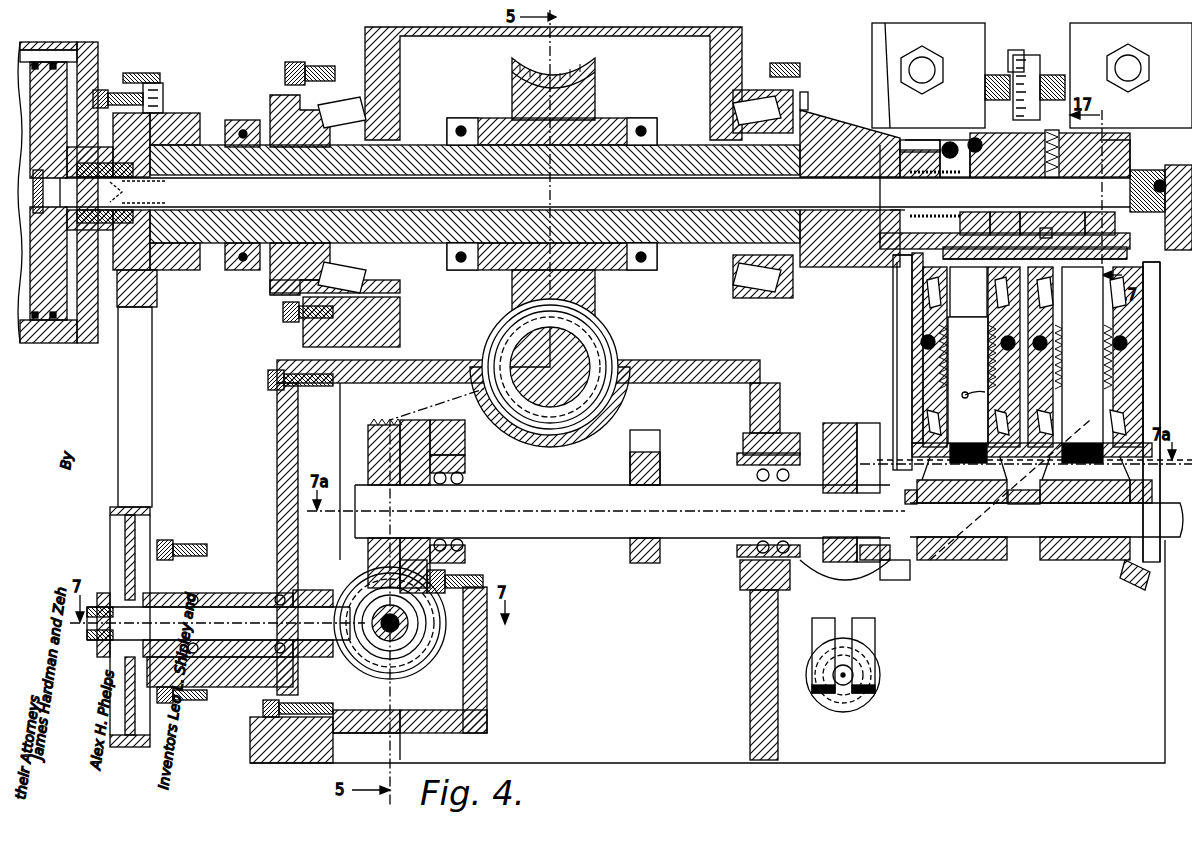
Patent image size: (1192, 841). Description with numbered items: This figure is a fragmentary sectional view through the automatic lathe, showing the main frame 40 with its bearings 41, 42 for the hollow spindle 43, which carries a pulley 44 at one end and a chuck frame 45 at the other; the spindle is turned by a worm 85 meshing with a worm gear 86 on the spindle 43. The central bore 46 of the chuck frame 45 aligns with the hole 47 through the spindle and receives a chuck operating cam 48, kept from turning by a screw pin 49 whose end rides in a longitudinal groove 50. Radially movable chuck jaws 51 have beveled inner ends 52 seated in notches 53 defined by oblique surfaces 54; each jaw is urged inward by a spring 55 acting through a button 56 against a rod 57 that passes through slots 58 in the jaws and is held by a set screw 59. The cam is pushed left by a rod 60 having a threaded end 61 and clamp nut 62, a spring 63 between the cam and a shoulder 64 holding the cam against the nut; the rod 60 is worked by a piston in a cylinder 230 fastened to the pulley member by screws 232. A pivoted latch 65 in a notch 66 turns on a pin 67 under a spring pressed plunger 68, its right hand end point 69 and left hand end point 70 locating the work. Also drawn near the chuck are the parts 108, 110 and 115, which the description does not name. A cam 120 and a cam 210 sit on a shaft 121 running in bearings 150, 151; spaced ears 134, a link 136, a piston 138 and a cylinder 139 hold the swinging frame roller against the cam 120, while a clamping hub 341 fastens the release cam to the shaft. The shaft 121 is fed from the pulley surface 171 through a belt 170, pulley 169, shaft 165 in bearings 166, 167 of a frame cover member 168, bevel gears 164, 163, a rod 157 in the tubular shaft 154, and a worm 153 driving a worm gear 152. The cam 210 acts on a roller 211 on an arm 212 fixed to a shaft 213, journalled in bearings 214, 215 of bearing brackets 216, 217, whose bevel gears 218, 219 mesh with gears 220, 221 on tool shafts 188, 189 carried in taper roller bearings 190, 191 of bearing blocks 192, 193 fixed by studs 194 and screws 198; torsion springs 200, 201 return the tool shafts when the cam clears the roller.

The main frame 40 is at (484, 680).
The bearing 41 is at (345, 110).
The bearing 42 is at (757, 118).
The spindle 43 is at (272, 160).
The pulley 44 is at (165, 128).
The chuck frame 45 is at (858, 132).
The central bore 46 is at (930, 140).
The hole 47 is at (660, 178).
The chuck operating cam 48 is at (1120, 140).
The screw pin 49 is at (1053, 132).
The longitudinal groove 50 is at (1012, 165).
The chuck jaws 51 is at (1130, 240).
The beveled inner end 52 is at (1008, 222).
The notch 53 is at (938, 214).
The oblique surface 54 is at (1036, 222).
The spring 55 is at (985, 222).
The button 56 is at (968, 370).
The rod 57 is at (975, 360).
The slots 58 is at (1130, 253).
The set screw 59 is at (1062, 224).
The rod 60 is at (600, 185).
The threaded end 61 is at (1142, 172).
The clamp nut 62 is at (1162, 180).
The spring 63 is at (895, 210).
The shoulder 64 is at (890, 191).
The pivoted latch 65 is at (950, 142).
The notch 66 is at (985, 125).
The pin 67 is at (940, 150).
The spring pressed plunger 68 is at (952, 140).
The right hand end point 69 is at (976, 138).
The left hand end point 70 is at (940, 134).
The worm 85 is at (600, 318).
The worm gear 86 is at (495, 157).
The nut 108 is at (924, 66).
The vernier scale 110 is at (1030, 58).
The index 115 is at (1022, 55).
The cam 120 is at (842, 425).
The shaft 121 is at (590, 540).
The spaced ears 134 is at (815, 645).
The link 136 is at (845, 700).
The piston 138 is at (830, 700).
The cylinder 139 is at (865, 692).
The bearing 150 is at (446, 445).
The bearing 151 is at (727, 562).
The worm gear 152 is at (378, 425).
The worm 153 is at (432, 660).
The shaft 154 is at (416, 655).
The rod 157 is at (378, 663).
The bevel gear 163 is at (448, 654).
The bevel gear 164 is at (324, 590).
The shaft 165 is at (222, 593).
The bearing 166 is at (185, 542).
The bearing 167 is at (270, 593).
The frame cover member 168 is at (283, 432).
The pulley 169 is at (147, 507).
The belt 170 is at (146, 346).
The pulley surface 171 is at (118, 90).
The shaft 188 is at (1088, 503).
The shaft 189 is at (966, 503).
The taper roller bearings 190 is at (1150, 282).
The taper roller bearings 191 is at (905, 282).
The bearing block 192 is at (1148, 320).
The bearing block 193 is at (915, 352).
The studs 194 is at (928, 342).
The screws 198 is at (1106, 347).
The torsion spring 200 is at (1060, 395).
The torsion spring 201 is at (962, 395).
The cam 210 is at (872, 423).
The roller 211 is at (872, 600).
The arm 212 is at (895, 592).
The shaft 213 is at (1036, 538).
The bearing 214 is at (1148, 505).
The bearing 215 is at (915, 505).
The bearing bracket 216 is at (1152, 394).
The bearing bracket 217 is at (898, 372).
The bevel gear 218 is at (1130, 578).
The bevel gear 219 is at (912, 570).
The gear 220 is at (1040, 505).
The gear 221 is at (1010, 490).
The cylinder 230 is at (52, 343).
The screws 232 is at (163, 88).
The clamping hub 341 is at (661, 446).